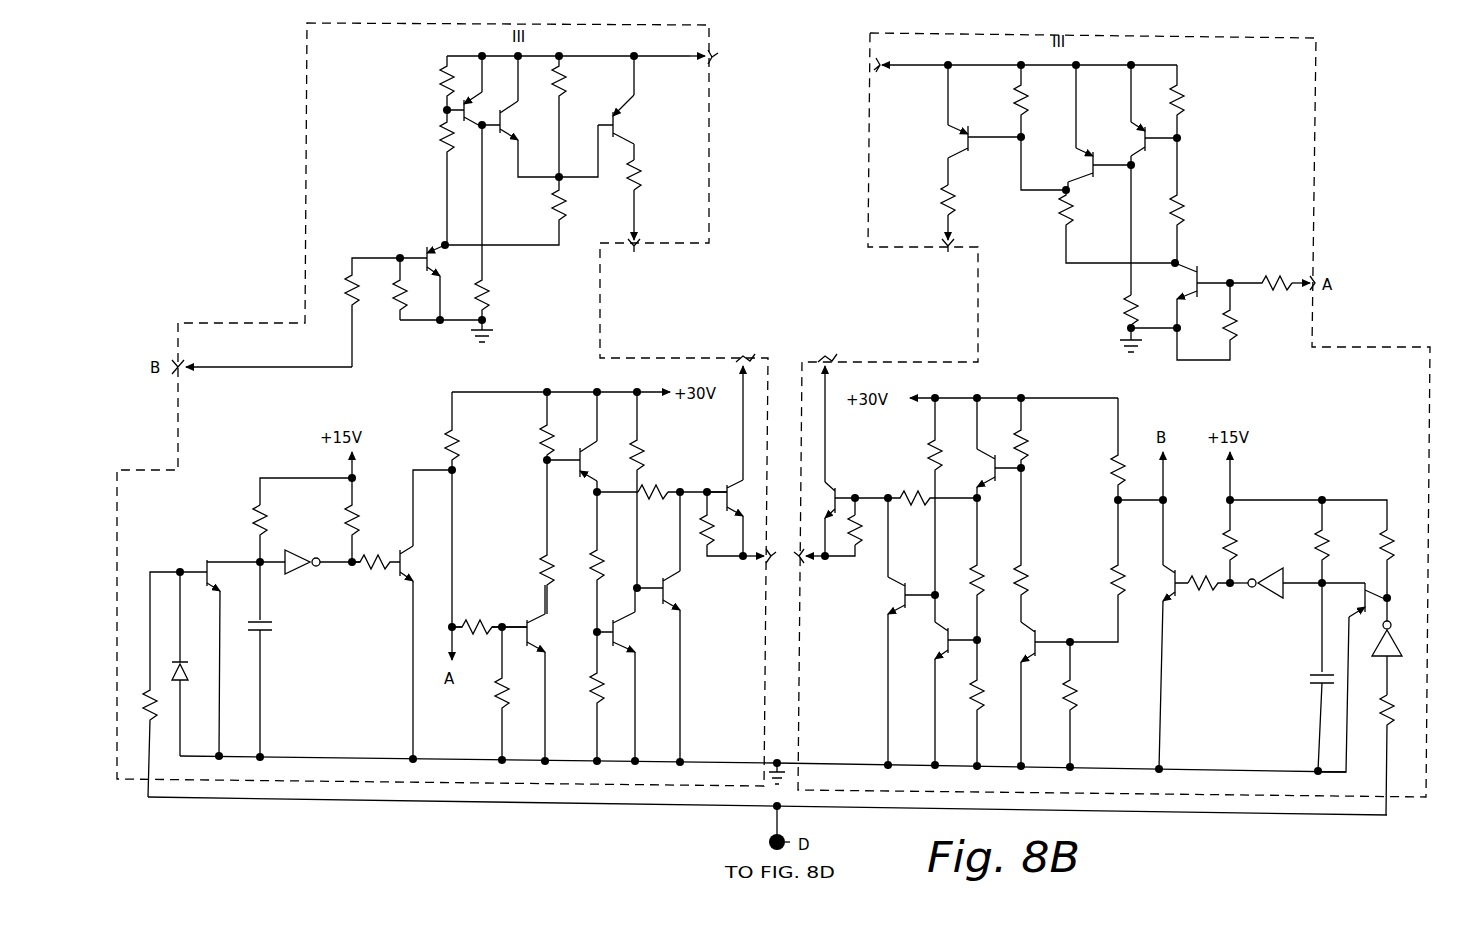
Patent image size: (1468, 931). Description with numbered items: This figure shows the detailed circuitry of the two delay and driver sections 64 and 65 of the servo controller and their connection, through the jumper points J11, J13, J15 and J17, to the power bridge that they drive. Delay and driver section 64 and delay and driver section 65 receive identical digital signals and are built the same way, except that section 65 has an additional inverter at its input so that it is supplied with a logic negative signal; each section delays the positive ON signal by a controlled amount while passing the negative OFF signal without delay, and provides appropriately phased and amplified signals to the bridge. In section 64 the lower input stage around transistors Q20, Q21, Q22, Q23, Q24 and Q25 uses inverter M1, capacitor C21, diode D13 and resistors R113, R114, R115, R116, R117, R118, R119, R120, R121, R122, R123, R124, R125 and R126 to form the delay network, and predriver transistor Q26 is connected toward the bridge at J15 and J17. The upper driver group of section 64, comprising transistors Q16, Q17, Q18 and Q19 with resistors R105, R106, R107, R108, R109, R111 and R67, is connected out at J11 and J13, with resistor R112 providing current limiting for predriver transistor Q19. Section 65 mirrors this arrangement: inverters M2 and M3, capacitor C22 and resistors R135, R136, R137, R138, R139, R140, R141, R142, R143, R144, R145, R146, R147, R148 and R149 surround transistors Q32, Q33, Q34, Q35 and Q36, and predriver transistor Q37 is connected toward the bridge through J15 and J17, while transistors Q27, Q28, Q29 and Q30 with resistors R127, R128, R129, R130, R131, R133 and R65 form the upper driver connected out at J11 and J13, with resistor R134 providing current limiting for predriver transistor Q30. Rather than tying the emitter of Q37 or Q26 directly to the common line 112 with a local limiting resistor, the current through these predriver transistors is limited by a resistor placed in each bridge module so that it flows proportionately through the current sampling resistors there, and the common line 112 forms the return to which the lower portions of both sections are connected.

The delay and driver section 64 is at (305, 188).
The delay and driver section 65 is at (1315, 210).
The common line 112 is at (1222, 770).
The resistor R105 is at (345, 285).
The resistor R106 is at (393, 308).
The resistor R107 is at (440, 80).
The resistor R108 is at (440, 136).
The resistor R109 is at (494, 296).
The resistor R111 is at (568, 86).
The resistor R112 is at (642, 168).
The resistor R113 is at (148, 730).
The resistor R114 is at (265, 505).
The resistor R115 is at (372, 490).
The resistor R116 is at (370, 575).
The resistor R117 is at (460, 452).
The resistor R118 is at (480, 636).
The resistor R119 is at (492, 690).
The resistor R120 is at (545, 430).
The resistor R121 is at (540, 568).
The resistor R122 is at (590, 565).
The resistor R123 is at (592, 678).
The resistor R124 is at (645, 432).
The resistor R125 is at (659, 484).
The resistor R126 is at (705, 548).
The resistor R127 is at (1282, 268).
The resistor R128 is at (1240, 340).
The resistor R129 is at (1190, 100).
The resistor R130 is at (1190, 192).
The resistor R131 is at (1122, 310).
The resistor R133 is at (1030, 100).
The resistor R134 is at (960, 205).
The resistor R135 is at (1392, 725).
The resistor R136 is at (1380, 538).
The resistor R137 is at (1312, 545).
The resistor R138 is at (1236, 526).
The resistor R139 is at (1203, 590).
The resistor R140 is at (1112, 482).
The resistor R141 is at (1112, 585).
The resistor R142 is at (1077, 695).
The resistor R143 is at (1040, 420).
The resistor R144 is at (1030, 550).
The resistor R145 is at (982, 565).
The resistor R146 is at (985, 695).
The resistor R147 is at (930, 442).
The resistor R148 is at (915, 482).
The resistor R149 is at (866, 550).
The resistor R65 is at (1075, 205).
The resistor R67 is at (552, 200).
The transistor Q16 is at (424, 250).
The transistor Q17 is at (470, 110).
The transistor Q18 is at (500, 135).
The predriver transistor Q19 is at (632, 118).
The transistor Q20 is at (200, 562).
The transistor Q21 is at (402, 548).
The transistor Q22 is at (522, 615).
The transistor Q23 is at (586, 478).
The transistor Q24 is at (628, 628).
The transistor Q25 is at (685, 596).
The predriver transistor Q26 is at (722, 478).
The transistor Q27 is at (1195, 266).
The transistor Q28 is at (1140, 136).
The transistor Q29 is at (1088, 162).
The predriver transistor Q30 is at (970, 152).
The transistor Q32 is at (1190, 565).
The transistor Q33 is at (1038, 656).
The transistor Q34 is at (992, 466).
The transistor Q35 is at (942, 638).
The transistor Q36 is at (898, 592).
The predriver transistor Q37 is at (838, 484).
The inverter M1 is at (296, 572).
The inverter M2 is at (1268, 597).
The inverter M3 is at (1402, 645).
The capacitor C21 is at (272, 626).
The capacitor C22 is at (1310, 678).
The diode D13 is at (188, 668).
The jumper J11 is at (716, 62).
The jumper J13 is at (642, 250).
The jumper J15 is at (745, 352).
The jumper J17 is at (784, 545).